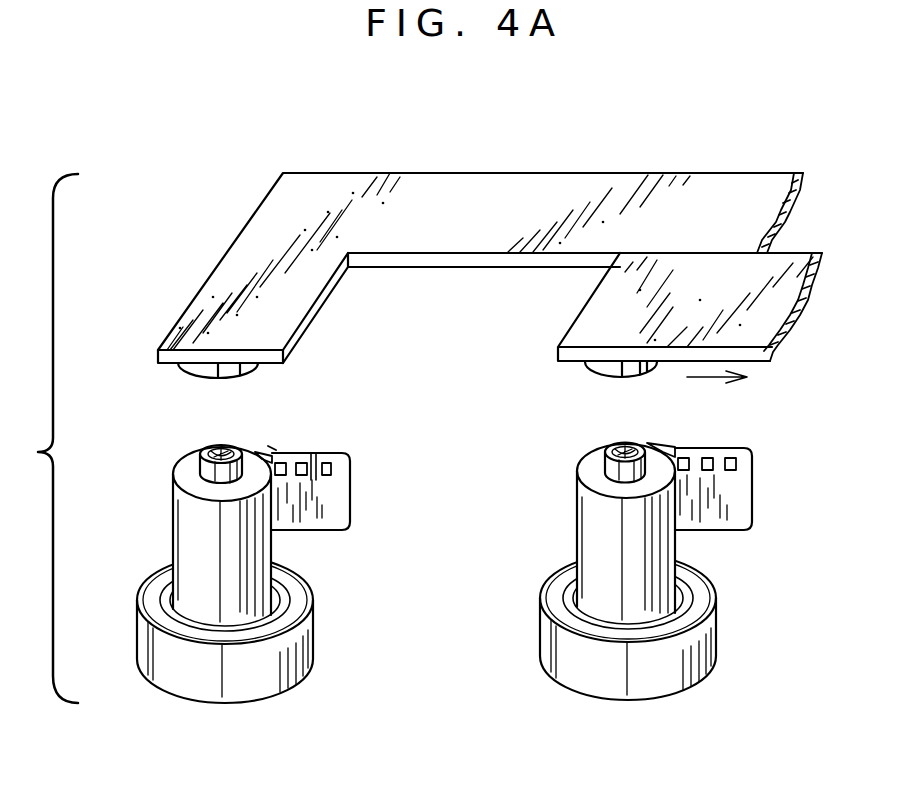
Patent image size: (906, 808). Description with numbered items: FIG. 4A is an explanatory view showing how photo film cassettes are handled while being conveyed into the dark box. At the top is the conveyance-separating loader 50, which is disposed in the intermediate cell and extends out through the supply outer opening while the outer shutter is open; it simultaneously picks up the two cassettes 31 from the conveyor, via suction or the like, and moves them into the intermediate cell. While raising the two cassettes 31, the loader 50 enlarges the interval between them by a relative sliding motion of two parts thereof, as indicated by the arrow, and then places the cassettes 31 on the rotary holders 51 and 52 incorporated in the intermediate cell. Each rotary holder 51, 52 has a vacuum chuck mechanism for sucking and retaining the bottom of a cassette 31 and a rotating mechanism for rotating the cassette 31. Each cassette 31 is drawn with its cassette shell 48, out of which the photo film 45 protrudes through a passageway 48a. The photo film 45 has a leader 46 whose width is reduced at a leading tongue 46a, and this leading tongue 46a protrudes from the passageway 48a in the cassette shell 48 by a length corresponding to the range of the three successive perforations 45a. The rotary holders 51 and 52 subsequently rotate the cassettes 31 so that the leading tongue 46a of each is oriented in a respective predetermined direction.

The conveyance-separating loader 50 is at (483, 135).
The cassette 31 is at (460, 507).
The cassette shell 48 is at (385, 497).
The passageway 48a is at (275, 450).
The photo film 45 is at (557, 514).
The perforations 45a is at (333, 468).
The leader 46 is at (314, 455).
The leading tongue 46a is at (332, 507).
The rotary holder 51 is at (218, 693).
The rotary holder 52 is at (637, 683).